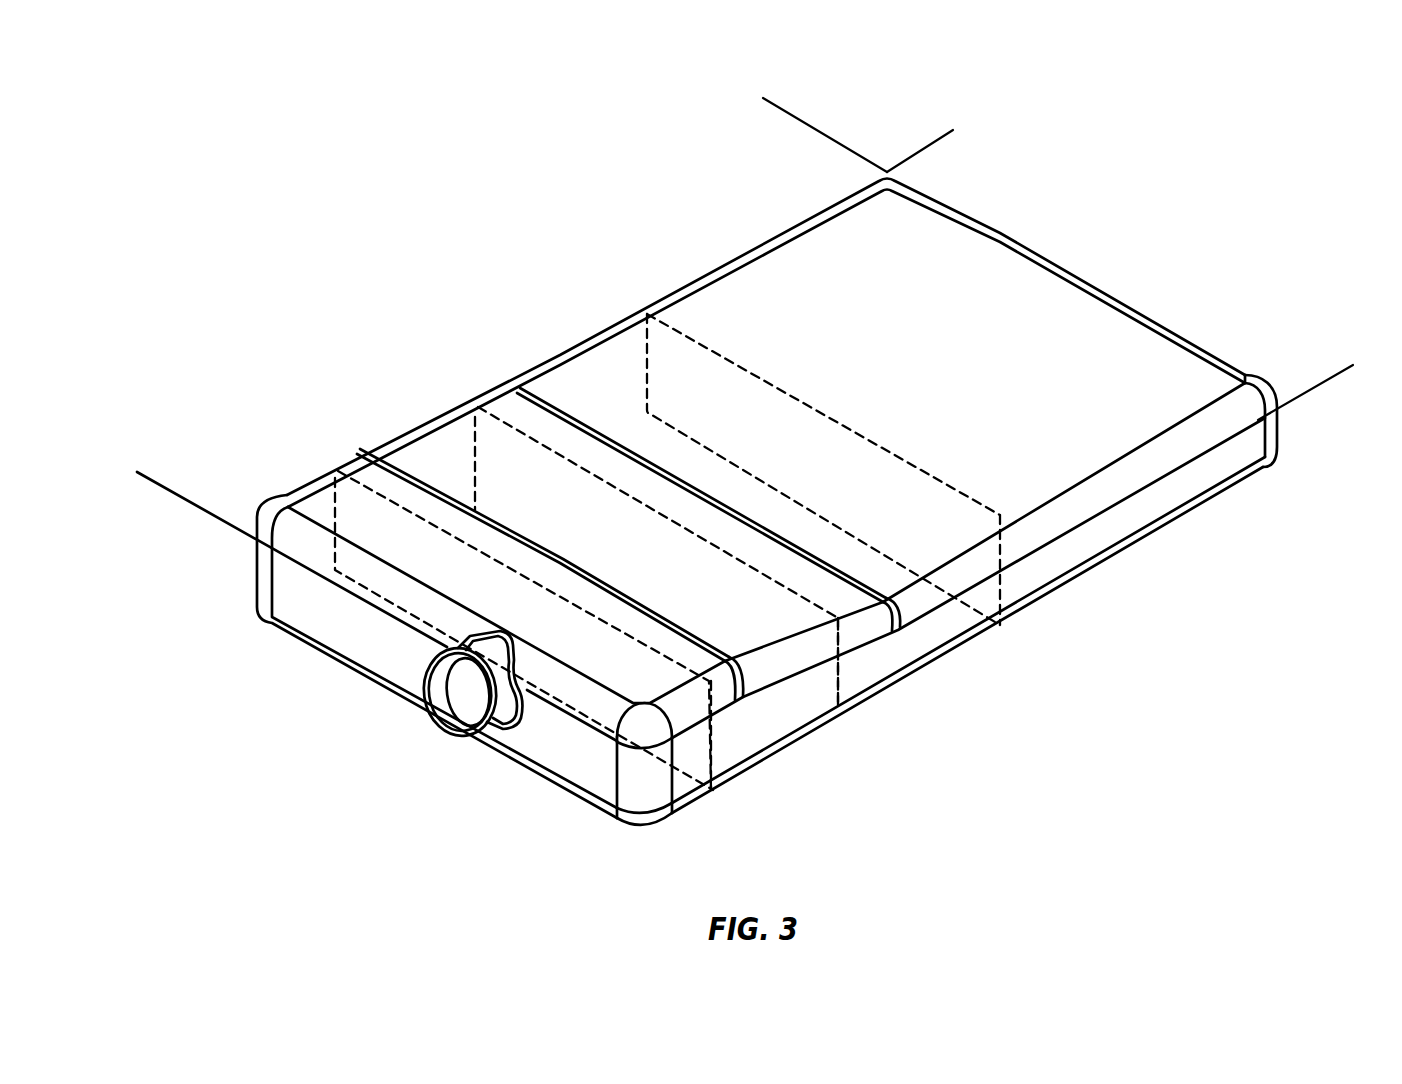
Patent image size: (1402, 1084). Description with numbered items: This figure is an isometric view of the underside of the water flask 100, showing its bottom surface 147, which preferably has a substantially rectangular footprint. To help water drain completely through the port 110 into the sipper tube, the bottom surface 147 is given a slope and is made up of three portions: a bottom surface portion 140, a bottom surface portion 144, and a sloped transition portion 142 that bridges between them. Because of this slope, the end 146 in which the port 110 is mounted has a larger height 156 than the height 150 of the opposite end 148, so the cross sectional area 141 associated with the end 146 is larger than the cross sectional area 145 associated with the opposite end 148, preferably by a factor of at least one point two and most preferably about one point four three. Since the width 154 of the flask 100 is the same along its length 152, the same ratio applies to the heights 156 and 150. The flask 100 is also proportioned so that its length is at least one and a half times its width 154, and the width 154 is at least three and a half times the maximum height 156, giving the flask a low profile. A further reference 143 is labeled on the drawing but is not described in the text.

The water flask 100 is at (353, 210).
The port 110 is at (467, 718).
The bottom surface portion 140 is at (378, 560).
The cross sectional area 141 is at (713, 752).
The sloped transition portion 142 is at (430, 462).
The second slot 143 is at (838, 673).
The bottom surface portion 144 is at (875, 207).
The cross sectional area 145 is at (740, 362).
The end 146 is at (700, 812).
The bottom surface 147 is at (598, 370).
The opposite end 148 is at (1271, 474).
The height 150 is at (1182, 583).
The length 152 is at (782, 113).
The width 154 is at (1320, 383).
The height 156 is at (381, 695).